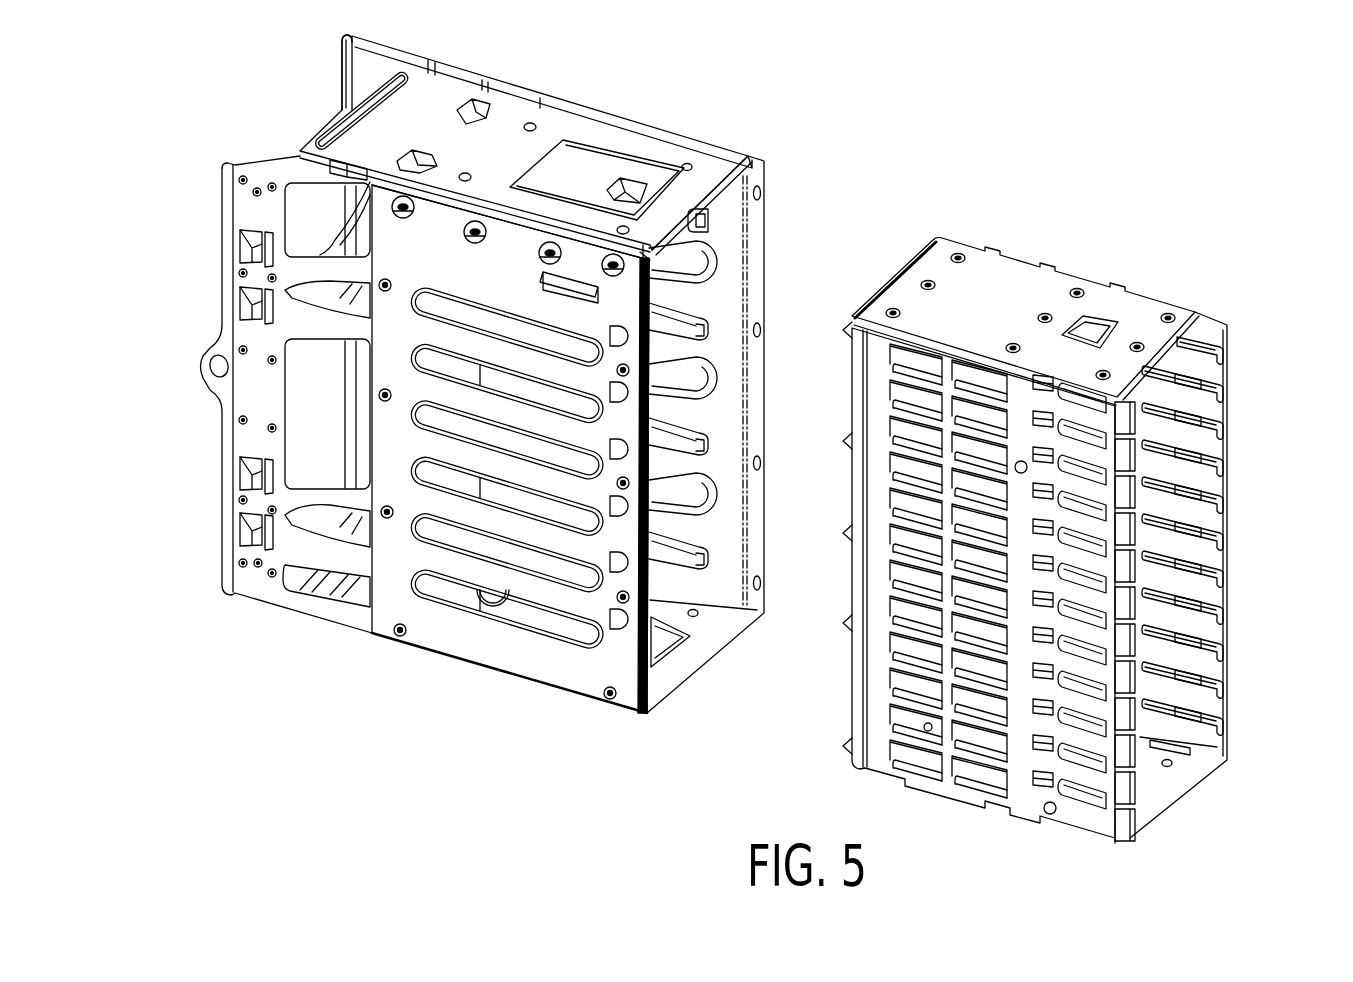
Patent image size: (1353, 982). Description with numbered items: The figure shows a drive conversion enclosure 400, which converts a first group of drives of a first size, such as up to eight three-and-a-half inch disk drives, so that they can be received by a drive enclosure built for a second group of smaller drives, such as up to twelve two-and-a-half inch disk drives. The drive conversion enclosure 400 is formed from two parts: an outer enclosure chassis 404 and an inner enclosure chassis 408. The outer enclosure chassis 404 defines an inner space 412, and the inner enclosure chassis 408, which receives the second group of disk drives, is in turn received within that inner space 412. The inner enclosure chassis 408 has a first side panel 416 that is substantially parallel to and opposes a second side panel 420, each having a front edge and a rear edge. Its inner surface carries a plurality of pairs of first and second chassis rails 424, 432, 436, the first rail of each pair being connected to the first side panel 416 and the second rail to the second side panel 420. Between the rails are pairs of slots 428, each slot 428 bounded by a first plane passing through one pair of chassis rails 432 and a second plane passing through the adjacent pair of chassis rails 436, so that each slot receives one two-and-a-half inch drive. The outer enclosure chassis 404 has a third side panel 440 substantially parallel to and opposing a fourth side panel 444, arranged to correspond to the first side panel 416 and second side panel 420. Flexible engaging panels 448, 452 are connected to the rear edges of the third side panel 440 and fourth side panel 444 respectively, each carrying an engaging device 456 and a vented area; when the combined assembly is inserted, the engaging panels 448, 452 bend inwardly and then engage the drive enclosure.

The drive conversion enclosure 400 is at (849, 177).
The outer enclosure chassis 404 is at (560, 103).
The inner enclosure chassis 408 is at (1037, 279).
The inner space 412 is at (732, 420).
The first side panel 416 is at (1224, 575).
The second side panel 420 is at (1097, 827).
The chassis rails 424 is at (1219, 733).
The slots 428 is at (1200, 375).
The chassis rails 432 is at (1220, 362).
The chassis rails 436 is at (1222, 401).
The third side panel 440 is at (737, 607).
The fourth side panel 444 is at (632, 707).
The engaging panel 448 is at (342, 40).
The engaging panel 452 is at (226, 167).
The engaging device 456 is at (246, 309).